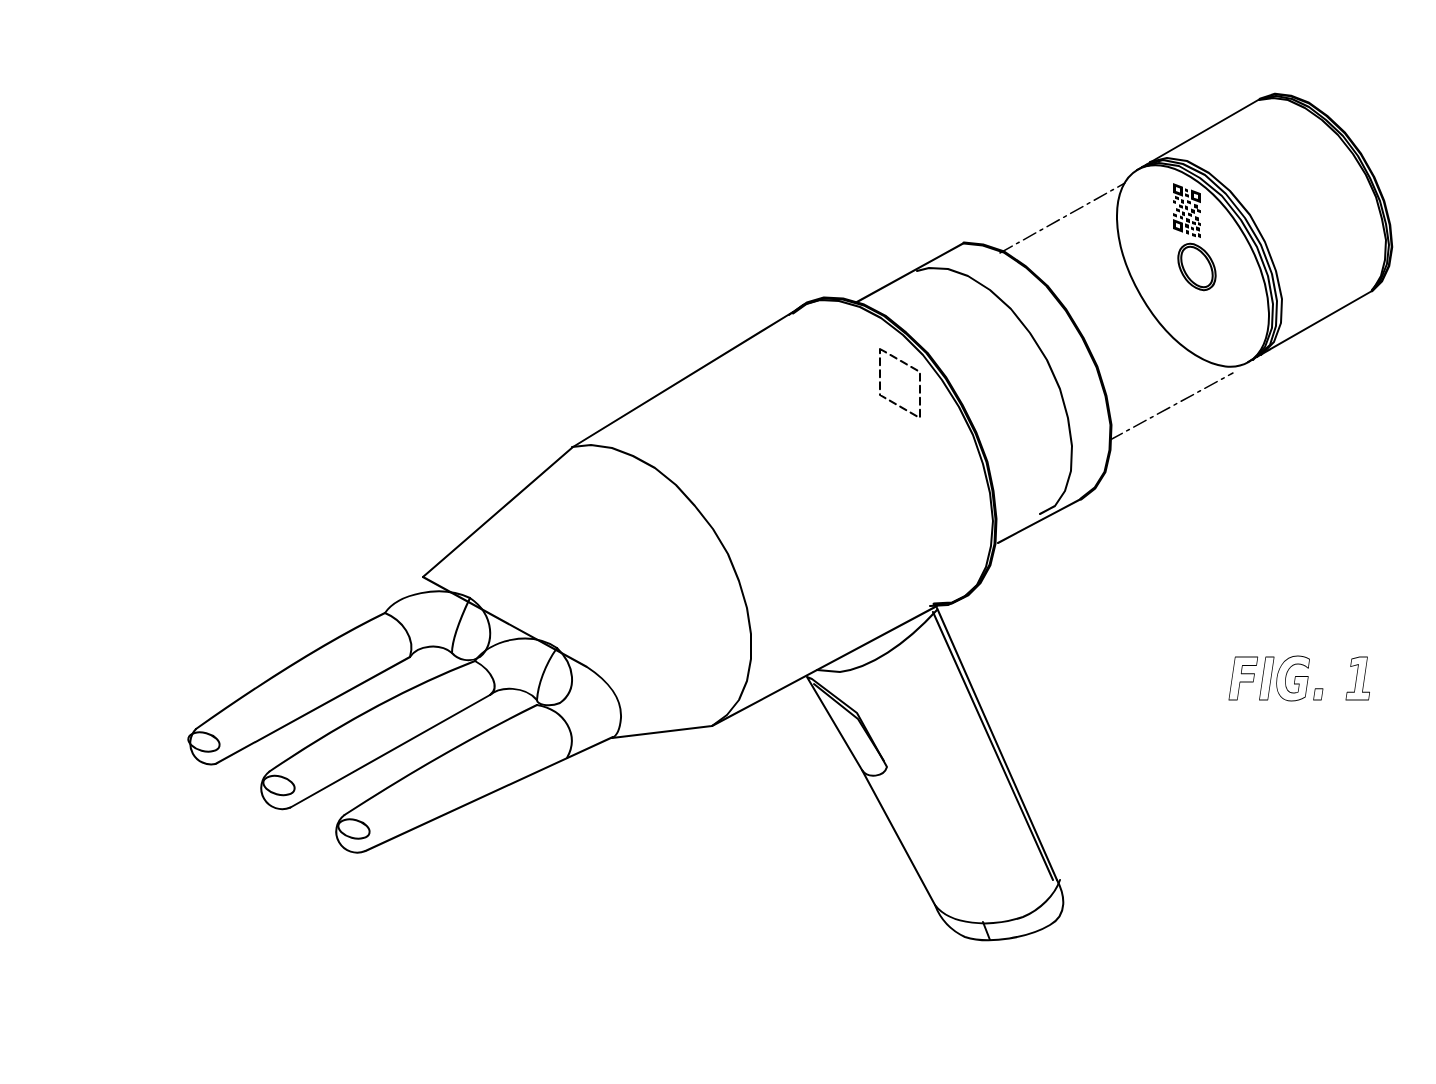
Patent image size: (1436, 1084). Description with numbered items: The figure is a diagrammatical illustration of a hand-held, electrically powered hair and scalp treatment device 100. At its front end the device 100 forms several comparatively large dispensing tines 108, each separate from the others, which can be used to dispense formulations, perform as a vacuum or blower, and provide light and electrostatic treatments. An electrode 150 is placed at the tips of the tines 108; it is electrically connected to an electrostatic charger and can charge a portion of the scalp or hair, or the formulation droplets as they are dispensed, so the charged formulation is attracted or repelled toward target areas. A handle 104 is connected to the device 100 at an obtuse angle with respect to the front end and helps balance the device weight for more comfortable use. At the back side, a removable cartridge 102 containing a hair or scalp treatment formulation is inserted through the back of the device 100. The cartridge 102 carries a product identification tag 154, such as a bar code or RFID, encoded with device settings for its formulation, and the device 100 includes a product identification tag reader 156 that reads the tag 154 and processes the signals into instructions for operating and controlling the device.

The hair and scalp treatment device 100 is at (695, 364).
The cartridge 102 is at (1217, 132).
The handle 104 is at (917, 848).
The dispensing tines 108 is at (293, 688).
The electrode 150 is at (196, 746).
The product identification tag 154 is at (1173, 222).
The product identification tag reader 156 is at (895, 352).